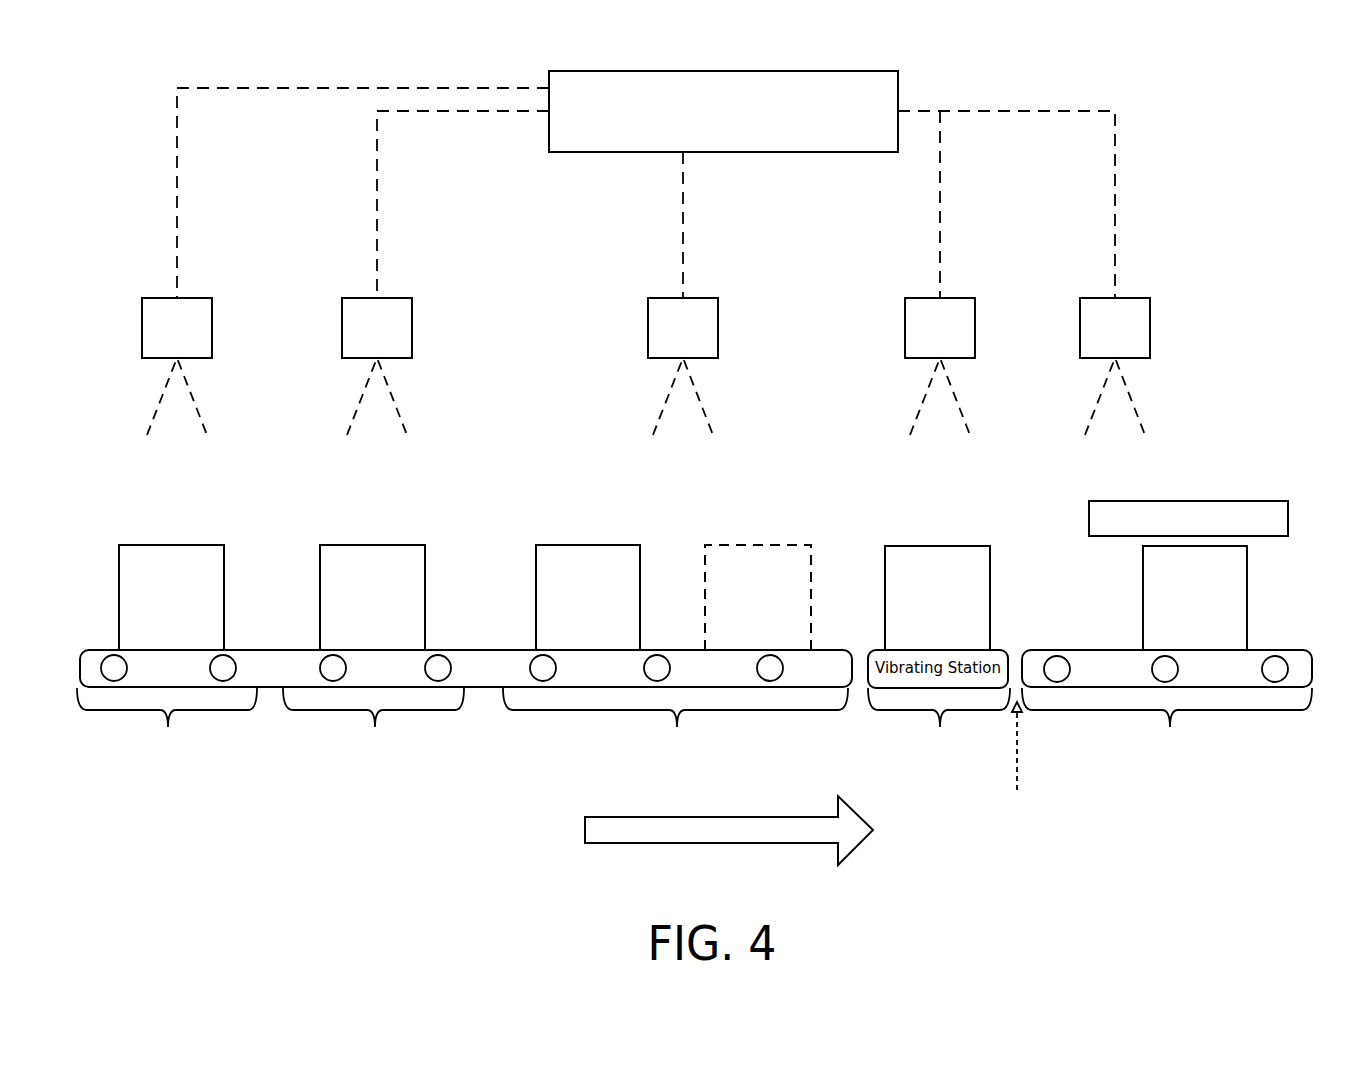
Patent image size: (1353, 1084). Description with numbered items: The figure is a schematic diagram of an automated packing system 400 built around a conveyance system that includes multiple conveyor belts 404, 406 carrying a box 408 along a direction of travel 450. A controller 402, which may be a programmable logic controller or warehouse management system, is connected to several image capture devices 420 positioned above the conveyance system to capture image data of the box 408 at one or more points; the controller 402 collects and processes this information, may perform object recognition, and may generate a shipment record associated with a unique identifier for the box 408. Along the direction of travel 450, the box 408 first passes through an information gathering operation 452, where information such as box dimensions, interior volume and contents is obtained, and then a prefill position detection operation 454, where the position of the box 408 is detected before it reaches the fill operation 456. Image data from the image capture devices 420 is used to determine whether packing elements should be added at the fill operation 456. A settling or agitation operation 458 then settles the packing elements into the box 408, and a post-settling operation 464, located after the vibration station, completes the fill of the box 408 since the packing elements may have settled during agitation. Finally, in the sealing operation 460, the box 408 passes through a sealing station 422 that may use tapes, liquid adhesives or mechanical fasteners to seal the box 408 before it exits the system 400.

The system 400 is at (1159, 102).
The controller 402 is at (860, 86).
The conveyor belt 404 is at (267, 668).
The conveyor belt 406 is at (1275, 669).
The box 408 is at (212, 589).
The image capture device 420 is at (201, 322).
The sealing station 422 is at (1272, 510).
The direction of travel 450 is at (753, 843).
The information gathering operation 452 is at (195, 805).
The prefill position detection operation 454 is at (375, 805).
The fill operation 456 is at (690, 755).
The settling operation 458 is at (943, 784).
The sealing operation 460 is at (1175, 785).
The post-settling operation 464 is at (1050, 836).